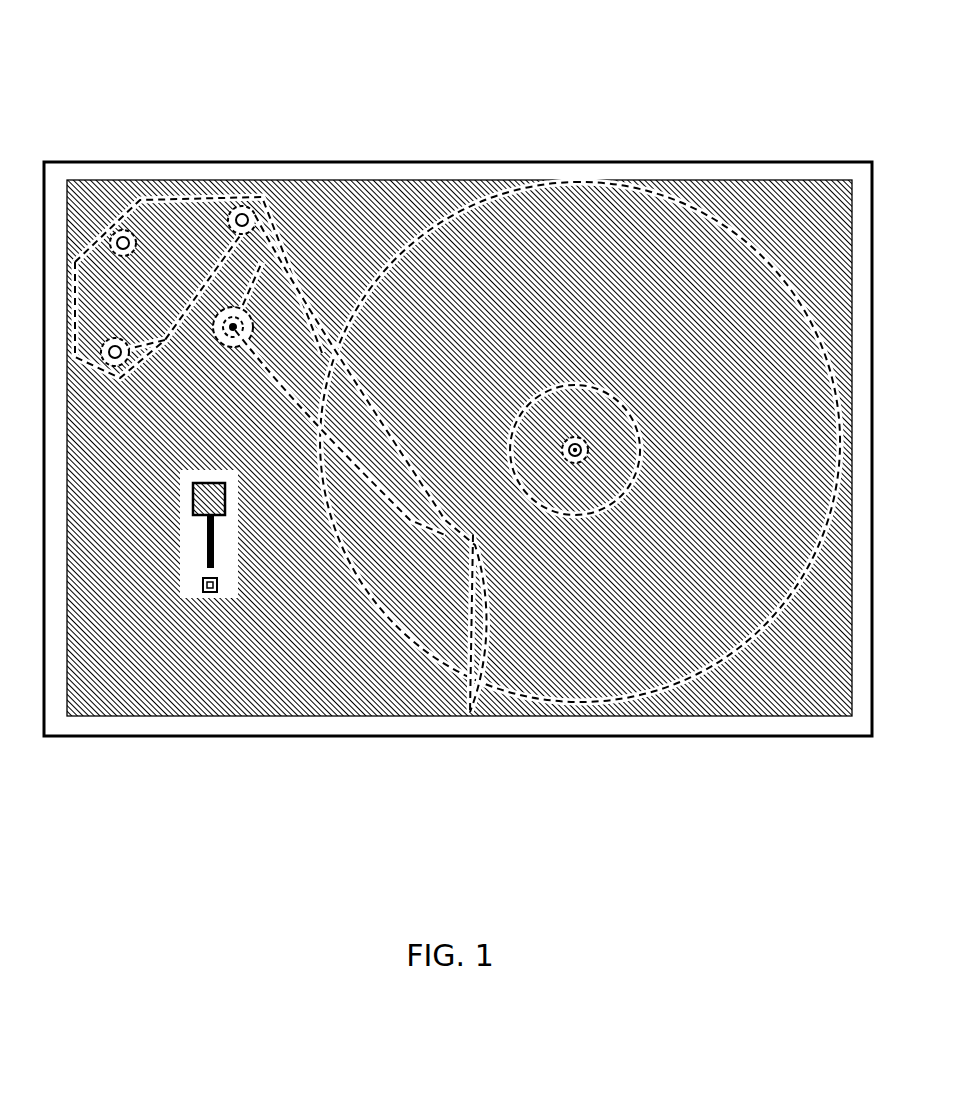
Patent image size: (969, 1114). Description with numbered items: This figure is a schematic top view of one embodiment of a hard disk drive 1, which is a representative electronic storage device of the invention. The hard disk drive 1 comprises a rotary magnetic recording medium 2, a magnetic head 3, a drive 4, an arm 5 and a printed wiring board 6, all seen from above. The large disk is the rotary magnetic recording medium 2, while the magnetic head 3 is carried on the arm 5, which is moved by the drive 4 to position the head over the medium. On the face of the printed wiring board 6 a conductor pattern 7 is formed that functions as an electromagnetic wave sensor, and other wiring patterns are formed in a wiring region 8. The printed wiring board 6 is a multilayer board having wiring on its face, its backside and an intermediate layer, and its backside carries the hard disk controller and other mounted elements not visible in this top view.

The hard disk drive 1 is at (92, 162).
The rotary magnetic recording medium 2 is at (580, 374).
The magnetic head 3 is at (371, 523).
The drive 4 is at (198, 197).
The arm 5 is at (372, 199).
The printed wiring board 6 is at (780, 737).
The conductor pattern 7 is at (213, 517).
The wiring region 8 is at (383, 680).